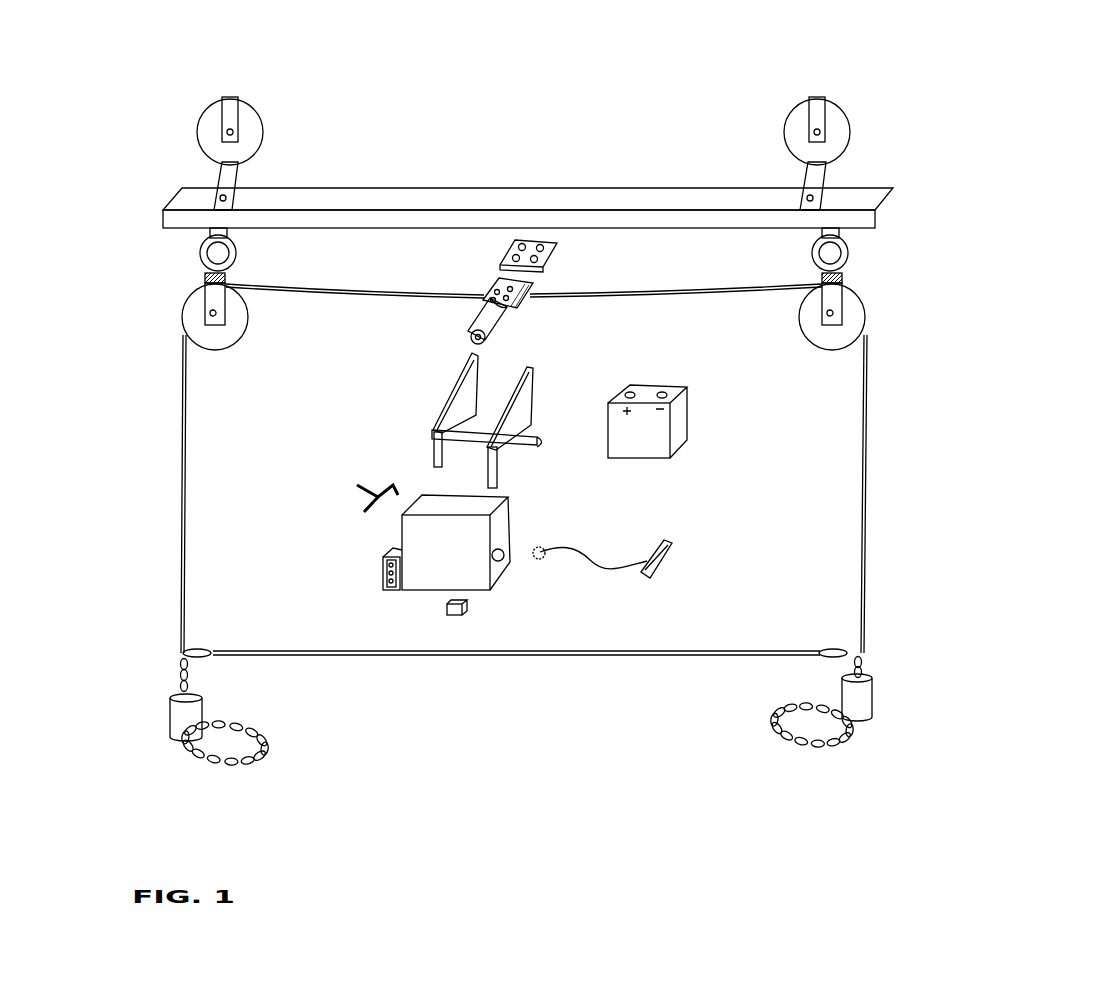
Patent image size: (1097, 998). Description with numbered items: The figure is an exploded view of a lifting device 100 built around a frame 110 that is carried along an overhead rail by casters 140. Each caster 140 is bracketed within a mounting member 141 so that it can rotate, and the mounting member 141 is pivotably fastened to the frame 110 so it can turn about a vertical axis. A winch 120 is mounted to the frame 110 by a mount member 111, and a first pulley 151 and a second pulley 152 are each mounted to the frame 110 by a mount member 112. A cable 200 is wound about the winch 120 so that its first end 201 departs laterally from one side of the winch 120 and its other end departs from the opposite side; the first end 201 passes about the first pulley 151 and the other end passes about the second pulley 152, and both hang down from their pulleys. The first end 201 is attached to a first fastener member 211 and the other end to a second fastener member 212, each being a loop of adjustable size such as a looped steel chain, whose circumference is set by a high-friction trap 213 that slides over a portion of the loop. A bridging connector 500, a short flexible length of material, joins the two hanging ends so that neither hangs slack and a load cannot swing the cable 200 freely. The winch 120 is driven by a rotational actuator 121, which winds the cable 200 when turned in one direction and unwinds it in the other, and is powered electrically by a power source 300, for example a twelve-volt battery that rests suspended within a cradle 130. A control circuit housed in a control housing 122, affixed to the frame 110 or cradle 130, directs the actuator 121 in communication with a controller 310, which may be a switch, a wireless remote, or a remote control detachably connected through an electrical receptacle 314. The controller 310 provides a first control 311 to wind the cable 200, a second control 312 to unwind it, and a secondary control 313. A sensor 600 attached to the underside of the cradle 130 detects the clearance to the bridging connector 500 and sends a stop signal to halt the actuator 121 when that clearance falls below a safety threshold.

The lifting device 100 is at (403, 883).
The frame 110 is at (532, 202).
The mount member 111 is at (570, 253).
The mount member 112 is at (242, 247).
The winch 120 is at (514, 311).
The rotational actuator 121 is at (495, 313).
The control housing 122 is at (361, 488).
The cradle 130 is at (442, 382).
The caster 140 is at (250, 130).
The mounting member 141 is at (237, 173).
The first pulley 151 is at (232, 327).
The second pulley 152 is at (847, 310).
The cable 200 is at (180, 462).
The first end 201 is at (163, 658).
The first fastener member 211 is at (278, 740).
The second fastener member 212 is at (772, 738).
The trap 213 is at (180, 728).
The power source 300 is at (682, 422).
The controller 310 is at (683, 546).
The first control 311 is at (385, 570).
The second control 312 is at (392, 582).
The secondary control 313 is at (425, 561).
The electrical receptacle 314 is at (515, 542).
The bridging connector 500 is at (492, 660).
The sensor 600 is at (480, 610).